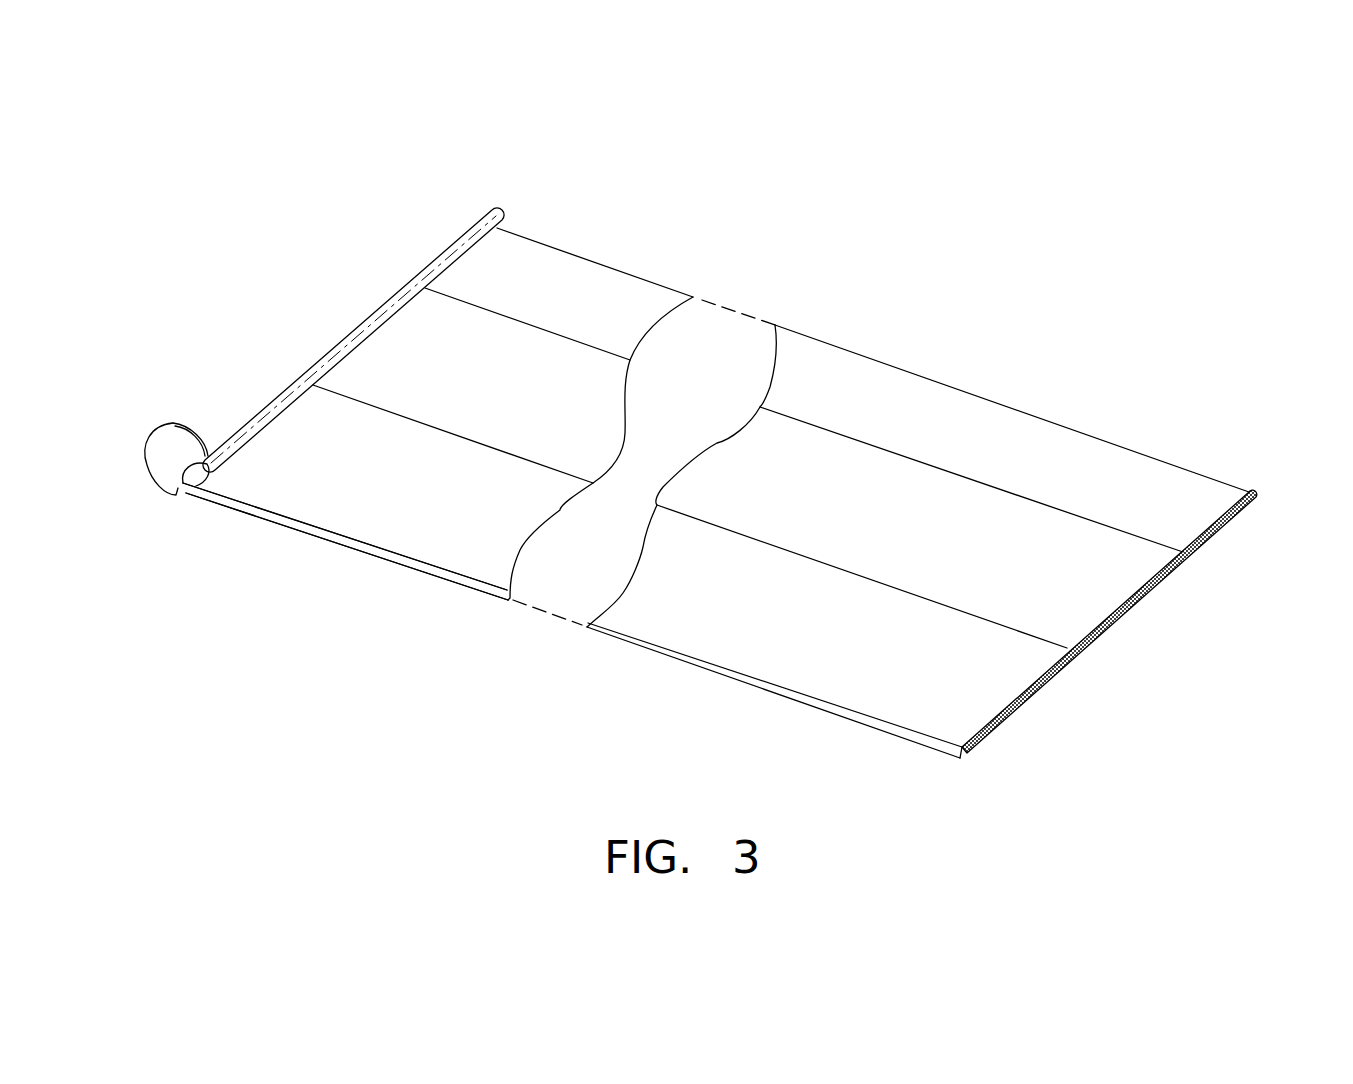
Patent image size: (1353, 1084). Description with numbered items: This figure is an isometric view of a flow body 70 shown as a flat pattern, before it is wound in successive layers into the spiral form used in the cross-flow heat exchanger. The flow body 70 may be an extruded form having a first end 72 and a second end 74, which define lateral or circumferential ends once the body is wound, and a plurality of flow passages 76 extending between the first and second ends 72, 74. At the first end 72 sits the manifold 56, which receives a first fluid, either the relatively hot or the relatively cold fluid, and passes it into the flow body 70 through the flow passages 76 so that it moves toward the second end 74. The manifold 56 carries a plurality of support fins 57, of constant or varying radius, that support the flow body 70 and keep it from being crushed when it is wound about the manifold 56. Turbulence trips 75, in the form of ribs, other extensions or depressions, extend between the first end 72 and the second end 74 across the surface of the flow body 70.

The manifold 56 is at (490, 207).
The support fins 57 is at (173, 422).
The flow body 70 is at (688, 200).
The first end 72 is at (203, 497).
The second end 74 is at (1182, 447).
The turbulence trips 75 is at (862, 443).
The flow passages 76 is at (1225, 530).